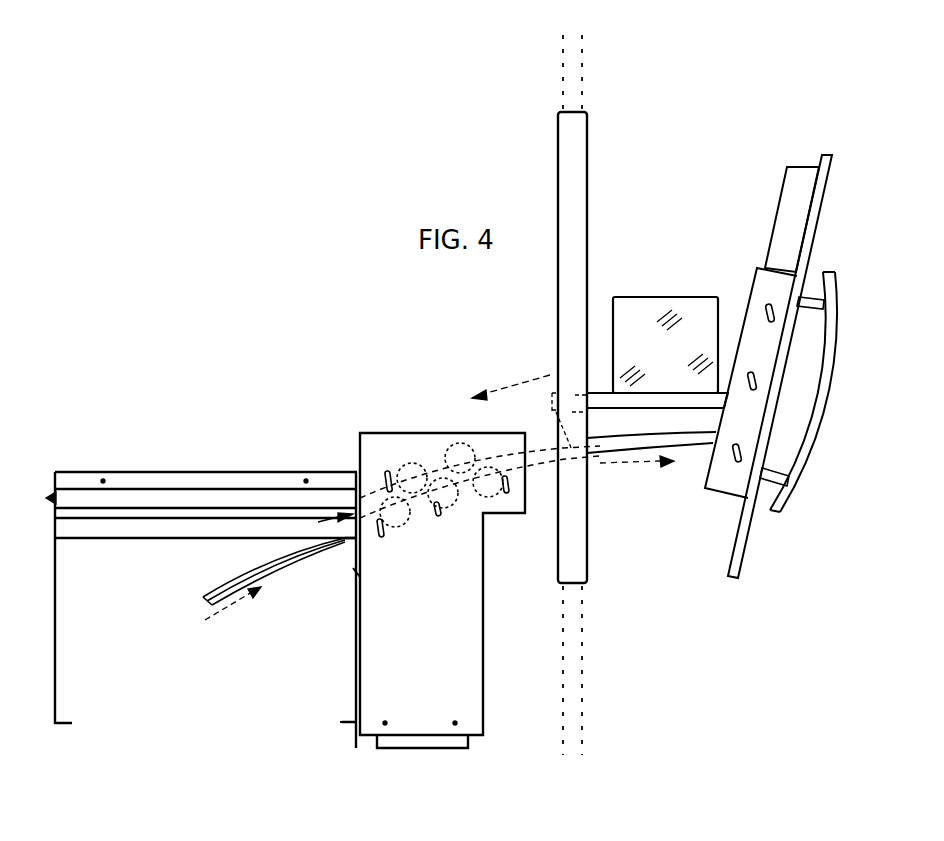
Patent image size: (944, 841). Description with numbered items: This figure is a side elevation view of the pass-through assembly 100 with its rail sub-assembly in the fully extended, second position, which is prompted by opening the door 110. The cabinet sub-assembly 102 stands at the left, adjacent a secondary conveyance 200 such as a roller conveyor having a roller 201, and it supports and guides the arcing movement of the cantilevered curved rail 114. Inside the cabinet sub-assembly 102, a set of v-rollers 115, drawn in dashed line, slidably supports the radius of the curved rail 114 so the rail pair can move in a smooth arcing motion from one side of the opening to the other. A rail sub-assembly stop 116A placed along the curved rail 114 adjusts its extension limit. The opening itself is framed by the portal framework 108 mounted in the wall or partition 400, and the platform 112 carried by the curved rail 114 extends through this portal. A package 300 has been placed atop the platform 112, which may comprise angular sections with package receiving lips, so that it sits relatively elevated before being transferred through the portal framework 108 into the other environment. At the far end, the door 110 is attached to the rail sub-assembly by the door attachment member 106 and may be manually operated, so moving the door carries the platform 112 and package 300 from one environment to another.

The pass-through assembly 100 is at (366, 338).
The cabinet sub-assembly 102 is at (470, 590).
The door attachment member 106 is at (760, 297).
The portal framework 108 is at (567, 158).
The door 110 is at (750, 530).
The platform 112 is at (612, 403).
The curved rail 114 is at (227, 582).
The v-roller 115 is at (456, 508).
The rail sub-assembly stop 116A is at (342, 542).
The secondary conveyance 200 is at (201, 589).
The roller 201 is at (202, 475).
The object/package 300 is at (628, 313).
The partition 400 is at (583, 633).